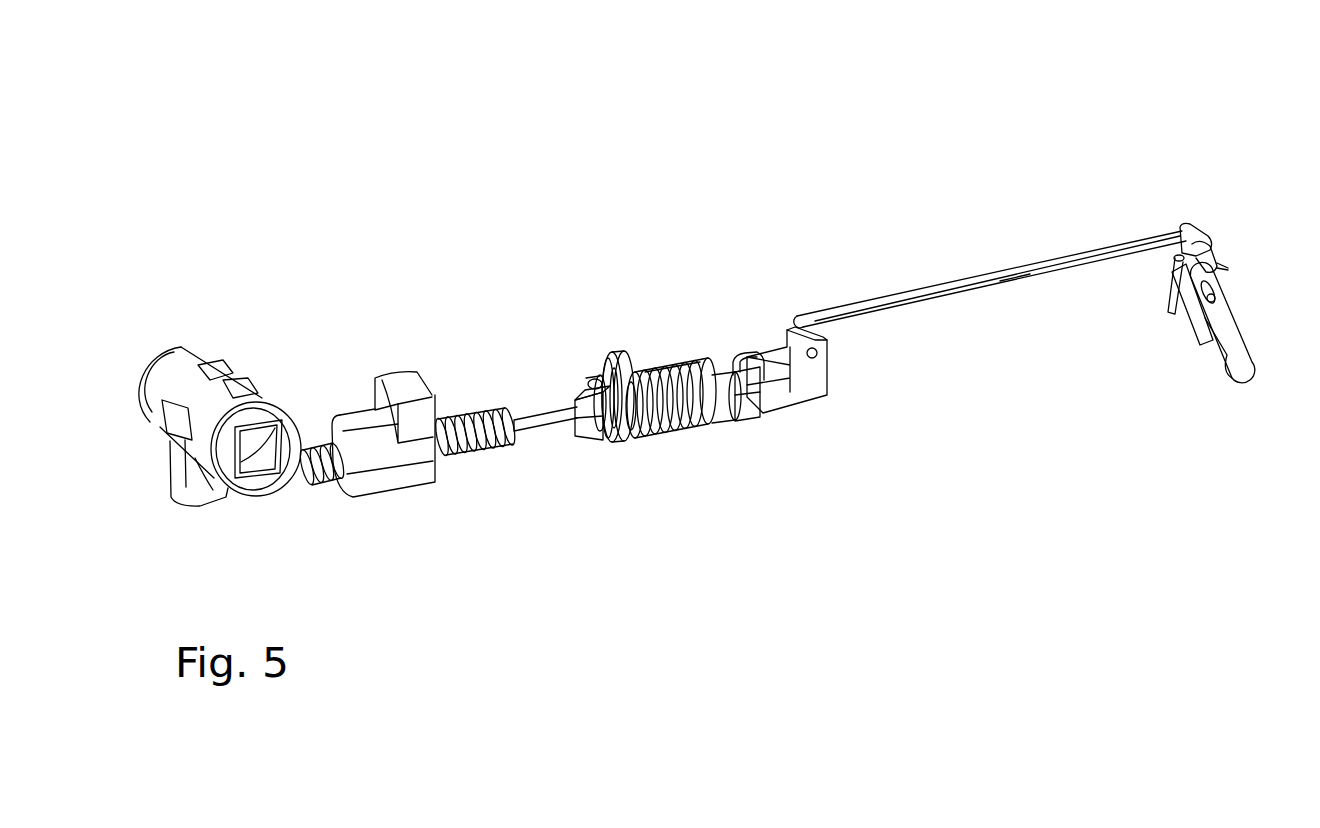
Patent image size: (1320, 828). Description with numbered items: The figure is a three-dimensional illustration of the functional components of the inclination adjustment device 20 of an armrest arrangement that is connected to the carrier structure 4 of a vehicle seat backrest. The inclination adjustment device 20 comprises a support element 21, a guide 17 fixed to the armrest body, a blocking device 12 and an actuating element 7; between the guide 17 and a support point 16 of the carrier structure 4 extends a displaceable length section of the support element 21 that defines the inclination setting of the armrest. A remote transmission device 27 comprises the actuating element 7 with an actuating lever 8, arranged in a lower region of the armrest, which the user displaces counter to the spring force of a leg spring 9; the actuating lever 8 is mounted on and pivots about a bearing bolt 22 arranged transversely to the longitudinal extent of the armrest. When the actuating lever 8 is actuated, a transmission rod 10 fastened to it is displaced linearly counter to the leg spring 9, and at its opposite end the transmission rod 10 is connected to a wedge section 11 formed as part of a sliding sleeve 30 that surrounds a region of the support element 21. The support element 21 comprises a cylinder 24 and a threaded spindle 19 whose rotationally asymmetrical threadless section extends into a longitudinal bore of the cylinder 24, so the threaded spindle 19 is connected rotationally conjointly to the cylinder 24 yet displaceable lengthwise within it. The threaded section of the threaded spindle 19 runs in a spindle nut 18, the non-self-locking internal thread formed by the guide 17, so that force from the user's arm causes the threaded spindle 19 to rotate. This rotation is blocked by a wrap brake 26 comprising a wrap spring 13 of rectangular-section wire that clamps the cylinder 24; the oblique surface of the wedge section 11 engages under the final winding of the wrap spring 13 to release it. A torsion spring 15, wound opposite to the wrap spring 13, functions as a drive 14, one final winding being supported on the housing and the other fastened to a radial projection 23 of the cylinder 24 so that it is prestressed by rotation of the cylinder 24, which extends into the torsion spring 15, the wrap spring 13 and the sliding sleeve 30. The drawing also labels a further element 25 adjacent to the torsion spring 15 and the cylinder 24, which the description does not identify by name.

The carrier structure 4 is at (188, 392).
The actuating element 7 is at (1202, 428).
The actuating lever 8 is at (1217, 362).
The leg spring 9 is at (1175, 297).
The transmission rod 10 is at (920, 290).
The wedge section 11 is at (748, 388).
The blocking device 12 is at (707, 440).
The wrap spring 13 is at (681, 360).
The drive 14 is at (580, 368).
The torsion spring 15 is at (594, 380).
The support point 16 is at (298, 472).
The guide 17 is at (360, 388).
The spindle nut 18 is at (390, 480).
The threaded spindle 19 is at (513, 447).
The inclination adjustment device 20 is at (367, 195).
The support element 21 is at (631, 440).
The bearing bolt 22 is at (1203, 345).
The radial projection 23 is at (598, 428).
The cylinder 24 is at (747, 360).
The washers 25 is at (603, 455).
The wrap brake 26 is at (666, 345).
The remote transmission device 27 is at (1012, 288).
The sliding sleeve 30 is at (813, 418).